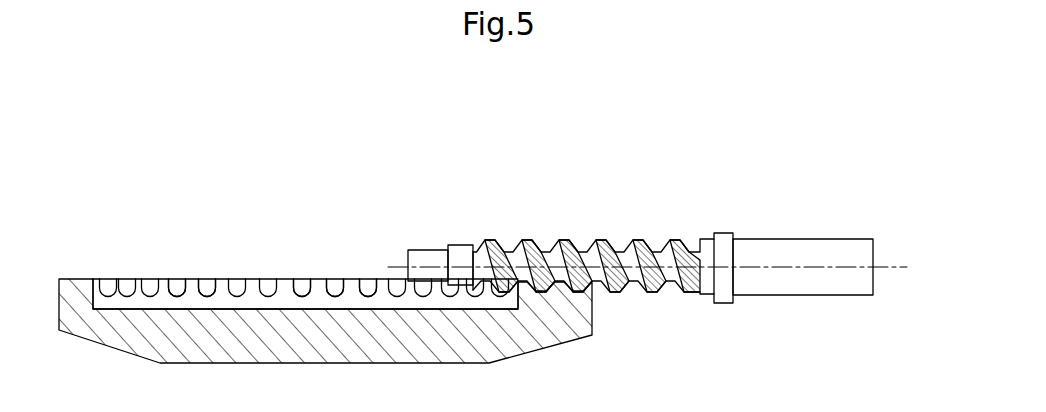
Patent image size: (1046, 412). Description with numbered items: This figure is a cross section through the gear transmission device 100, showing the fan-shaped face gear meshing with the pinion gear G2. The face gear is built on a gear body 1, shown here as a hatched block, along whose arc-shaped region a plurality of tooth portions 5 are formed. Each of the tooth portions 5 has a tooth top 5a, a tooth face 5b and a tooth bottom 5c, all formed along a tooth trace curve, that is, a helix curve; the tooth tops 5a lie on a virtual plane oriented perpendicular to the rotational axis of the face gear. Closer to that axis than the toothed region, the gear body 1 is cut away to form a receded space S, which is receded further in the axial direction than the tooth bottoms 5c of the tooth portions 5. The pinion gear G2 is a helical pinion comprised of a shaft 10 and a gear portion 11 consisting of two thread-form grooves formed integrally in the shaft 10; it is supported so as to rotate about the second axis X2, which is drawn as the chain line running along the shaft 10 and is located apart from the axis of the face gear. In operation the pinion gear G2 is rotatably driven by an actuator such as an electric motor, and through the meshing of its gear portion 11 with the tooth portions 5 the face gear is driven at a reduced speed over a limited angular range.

The gear transmission device 100 is at (482, 152).
The gear body 1 is at (530, 328).
The receded space S is at (145, 303).
The tooth portions 5 is at (568, 287).
The tooth top 5a is at (350, 280).
The tooth face 5b is at (302, 290).
The tooth bottom 5c is at (201, 293).
The pinion gear G2 is at (623, 232).
The gear portion 11 is at (615, 290).
The shaft 10 is at (767, 285).
The second axis X2 is at (668, 269).